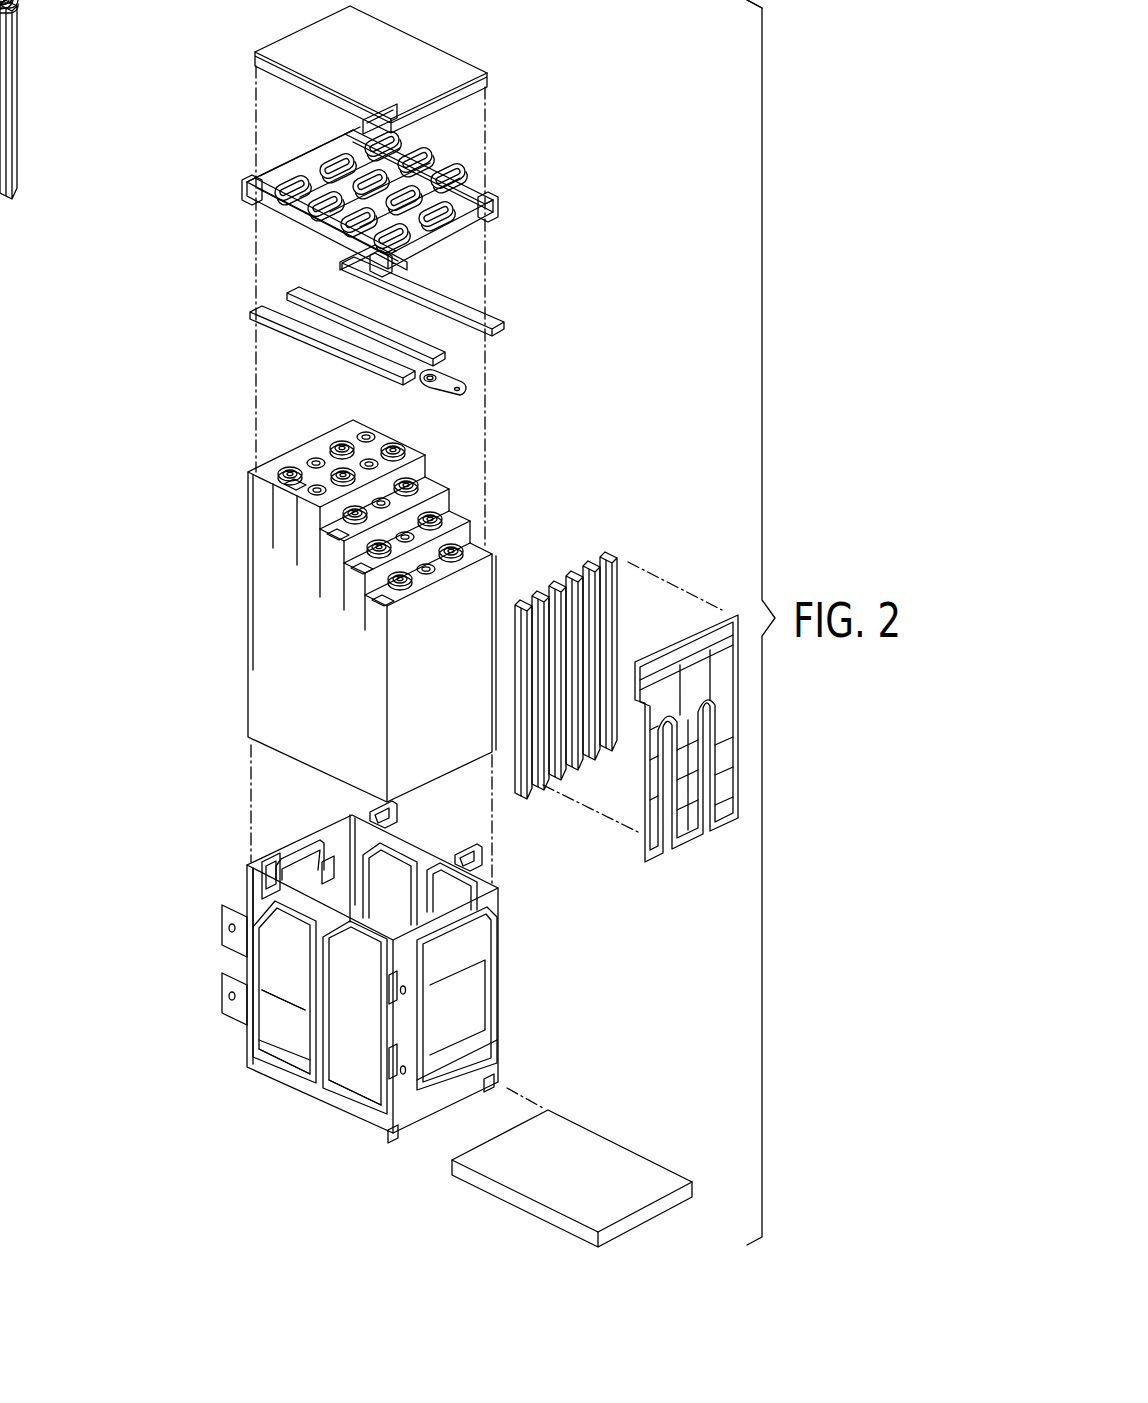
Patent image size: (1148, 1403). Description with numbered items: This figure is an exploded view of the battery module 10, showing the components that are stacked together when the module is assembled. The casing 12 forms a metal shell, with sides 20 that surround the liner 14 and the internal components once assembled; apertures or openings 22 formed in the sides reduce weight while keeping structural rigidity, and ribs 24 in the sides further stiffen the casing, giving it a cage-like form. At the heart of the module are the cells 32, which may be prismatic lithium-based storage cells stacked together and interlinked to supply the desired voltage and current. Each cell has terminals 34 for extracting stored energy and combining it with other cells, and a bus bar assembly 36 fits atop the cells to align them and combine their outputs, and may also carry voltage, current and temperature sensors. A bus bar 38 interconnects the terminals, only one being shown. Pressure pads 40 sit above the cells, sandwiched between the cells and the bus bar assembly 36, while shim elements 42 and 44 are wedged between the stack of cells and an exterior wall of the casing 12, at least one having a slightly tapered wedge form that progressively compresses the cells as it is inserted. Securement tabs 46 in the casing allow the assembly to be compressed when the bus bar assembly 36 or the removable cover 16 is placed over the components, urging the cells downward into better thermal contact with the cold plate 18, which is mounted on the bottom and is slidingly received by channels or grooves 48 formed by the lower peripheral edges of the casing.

The battery module 10 is at (168, 72).
The casing 12 is at (250, 1067).
The liner 14 is at (258, 712).
The cover 16 is at (418, 40).
The cold plate 18 is at (527, 1212).
The sides 20 is at (250, 882).
The apertures or openings 22 is at (355, 1077).
The ribs 24 is at (270, 975).
The cells 32 is at (283, 526).
The terminals 34 is at (283, 458).
The bus bar assembly 36 is at (495, 198).
The bus bar 38 is at (438, 393).
The pressure pads 40 is at (255, 312).
The shim element 42 is at (688, 833).
The shim element 44 is at (580, 767).
The securement tabs 46 is at (330, 868).
The channels or grooves 48 is at (395, 1136).